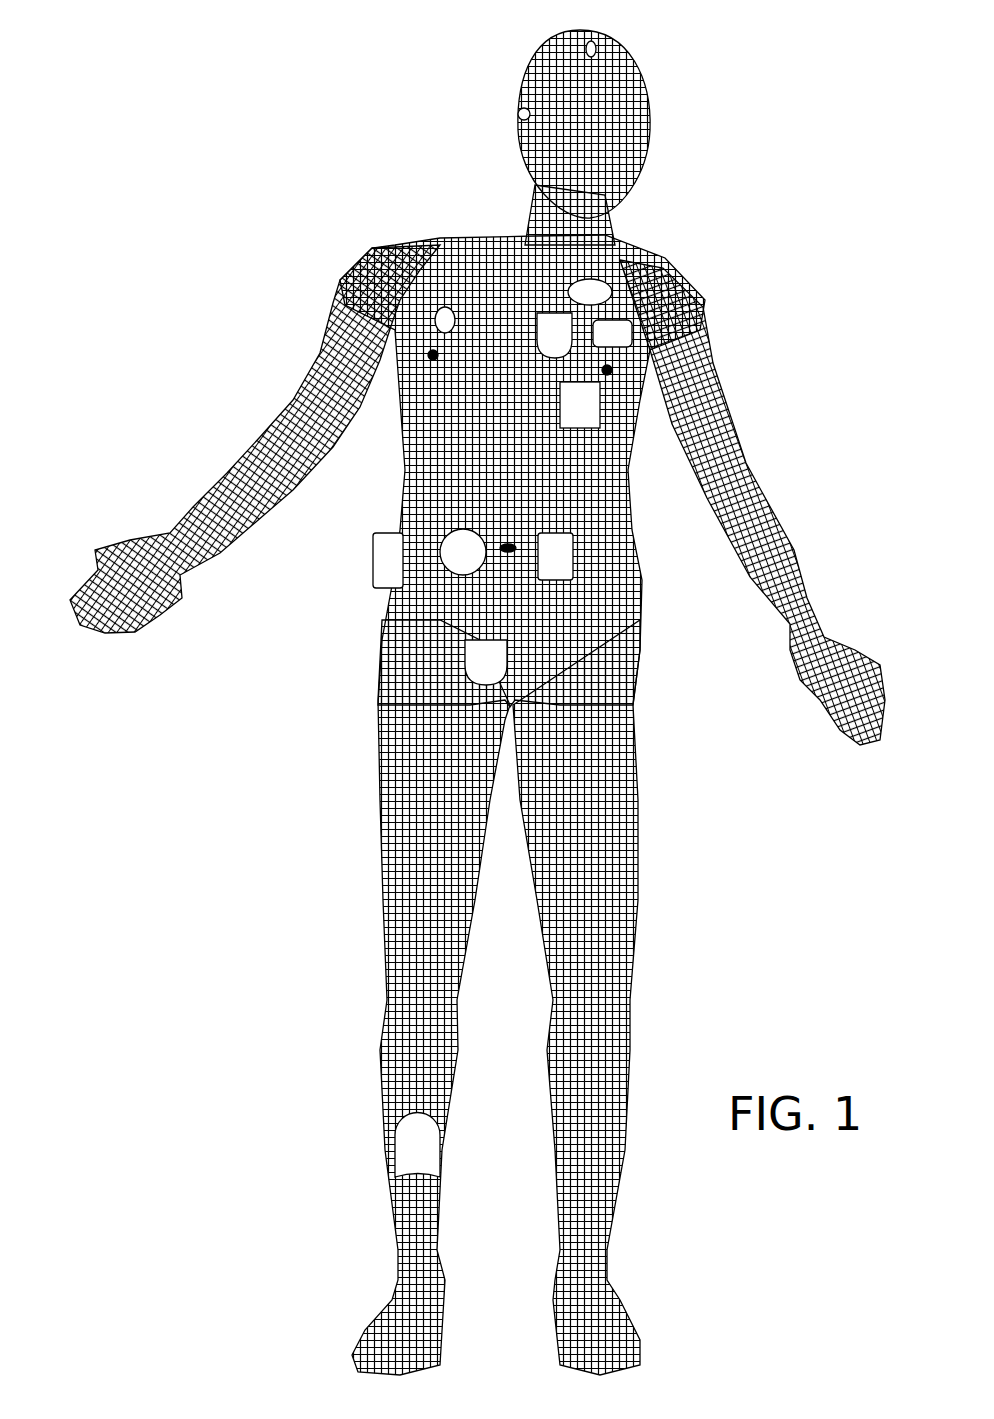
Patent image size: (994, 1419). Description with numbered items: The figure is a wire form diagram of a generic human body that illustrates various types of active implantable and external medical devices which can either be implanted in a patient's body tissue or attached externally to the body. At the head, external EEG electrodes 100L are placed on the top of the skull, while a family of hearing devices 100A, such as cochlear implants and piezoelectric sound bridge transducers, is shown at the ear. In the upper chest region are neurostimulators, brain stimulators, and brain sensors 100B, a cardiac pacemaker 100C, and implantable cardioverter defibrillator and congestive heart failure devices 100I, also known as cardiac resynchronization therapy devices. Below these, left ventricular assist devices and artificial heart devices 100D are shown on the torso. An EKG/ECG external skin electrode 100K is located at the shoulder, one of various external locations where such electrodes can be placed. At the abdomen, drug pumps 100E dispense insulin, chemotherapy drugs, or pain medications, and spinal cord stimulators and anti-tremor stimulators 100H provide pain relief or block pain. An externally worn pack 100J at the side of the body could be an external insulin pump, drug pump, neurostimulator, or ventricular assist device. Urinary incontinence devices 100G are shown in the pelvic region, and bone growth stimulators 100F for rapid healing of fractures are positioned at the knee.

The hearing devices 100A is at (463, 130).
The neurostimulators, brain stimulators, and brain sensors 100B is at (655, 256).
The cardiac pacemaker 100C is at (701, 305).
The left ventricular assist devices and artificial heart devices 100D is at (631, 455).
The drug pumps 100E is at (630, 575).
The bone growth stimulators 100F is at (336, 1131).
The urinary incontinence devices 100G is at (391, 671).
The spinal cord stimulators and anti-tremor stimulators 100H is at (388, 575).
The implantable cardioverter defibrillator and congestive heart failure devices 100I is at (458, 271).
The externally worn pack 100J is at (332, 557).
The EKG/ECG external skin electrodes 100K is at (305, 268).
The external EEG electrodes 100L is at (651, 30).